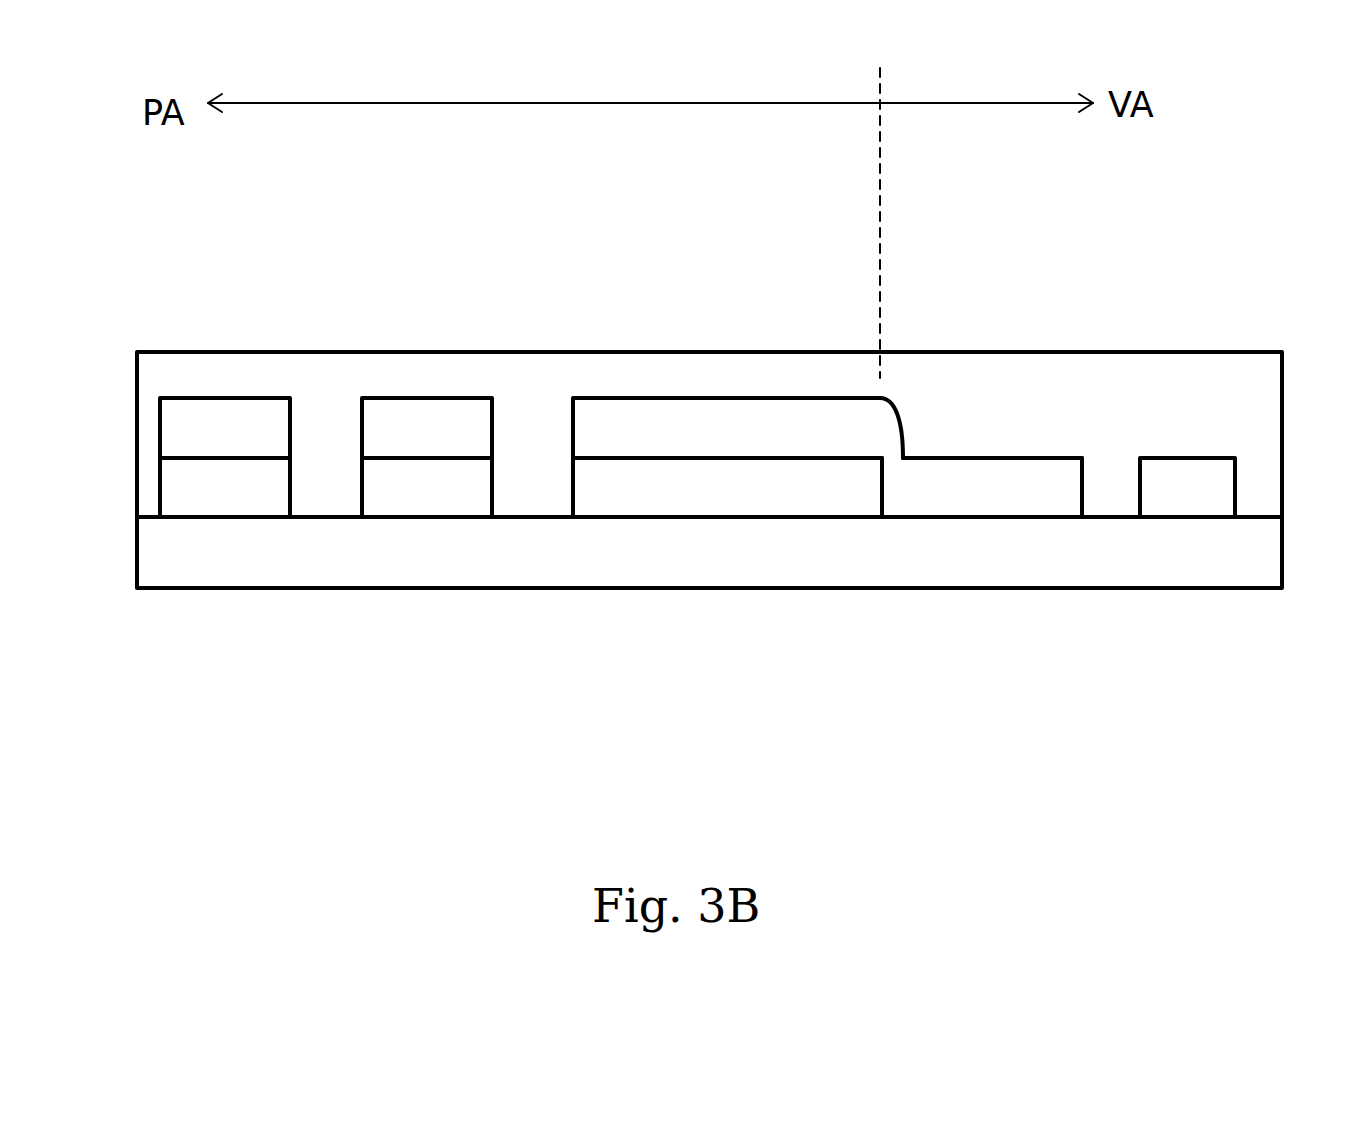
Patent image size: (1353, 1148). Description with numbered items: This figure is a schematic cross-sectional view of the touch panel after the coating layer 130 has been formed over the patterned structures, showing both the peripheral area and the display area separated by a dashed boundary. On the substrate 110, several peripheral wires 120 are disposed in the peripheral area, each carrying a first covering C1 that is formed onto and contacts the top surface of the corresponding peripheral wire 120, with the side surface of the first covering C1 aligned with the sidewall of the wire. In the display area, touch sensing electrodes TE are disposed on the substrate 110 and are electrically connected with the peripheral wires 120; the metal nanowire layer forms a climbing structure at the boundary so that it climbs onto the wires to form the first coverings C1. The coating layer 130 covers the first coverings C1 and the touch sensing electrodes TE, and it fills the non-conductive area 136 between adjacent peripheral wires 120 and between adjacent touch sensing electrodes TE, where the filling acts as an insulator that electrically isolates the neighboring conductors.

The substrate 110 is at (1128, 565).
The peripheral wire 120 is at (232, 497).
The coating layer 130 is at (562, 350).
The non-conductive area 136 is at (325, 420).
The first covering C1 is at (229, 393).
The touch sensing electrode TE is at (1047, 497).